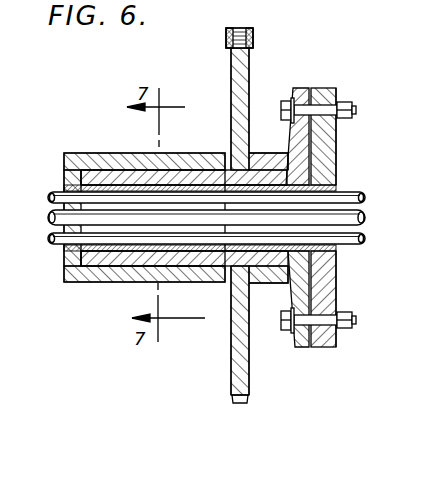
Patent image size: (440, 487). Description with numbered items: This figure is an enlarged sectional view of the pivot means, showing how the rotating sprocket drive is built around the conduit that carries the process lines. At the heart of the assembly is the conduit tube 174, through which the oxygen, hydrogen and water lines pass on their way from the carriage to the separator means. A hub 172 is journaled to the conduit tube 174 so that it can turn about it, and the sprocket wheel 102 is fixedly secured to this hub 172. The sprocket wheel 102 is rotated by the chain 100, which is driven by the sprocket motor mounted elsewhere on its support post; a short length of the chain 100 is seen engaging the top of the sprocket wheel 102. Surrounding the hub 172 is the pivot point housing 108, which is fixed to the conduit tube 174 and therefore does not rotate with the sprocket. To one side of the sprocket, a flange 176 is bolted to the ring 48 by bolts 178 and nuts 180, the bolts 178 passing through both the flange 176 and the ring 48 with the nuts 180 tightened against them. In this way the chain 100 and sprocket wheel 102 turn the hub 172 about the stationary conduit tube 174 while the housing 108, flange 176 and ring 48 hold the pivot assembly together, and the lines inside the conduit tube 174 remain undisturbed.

The ring 48 is at (335, 145).
The chain 100 is at (236, 30).
The sprocket wheel 102 is at (238, 75).
The pivot point housing 108 is at (119, 152).
The hub 172 is at (214, 152).
The conduit tube 174 is at (332, 182).
The flange 176 is at (303, 90).
The bolts 178 is at (319, 113).
The nuts 180 is at (357, 109).